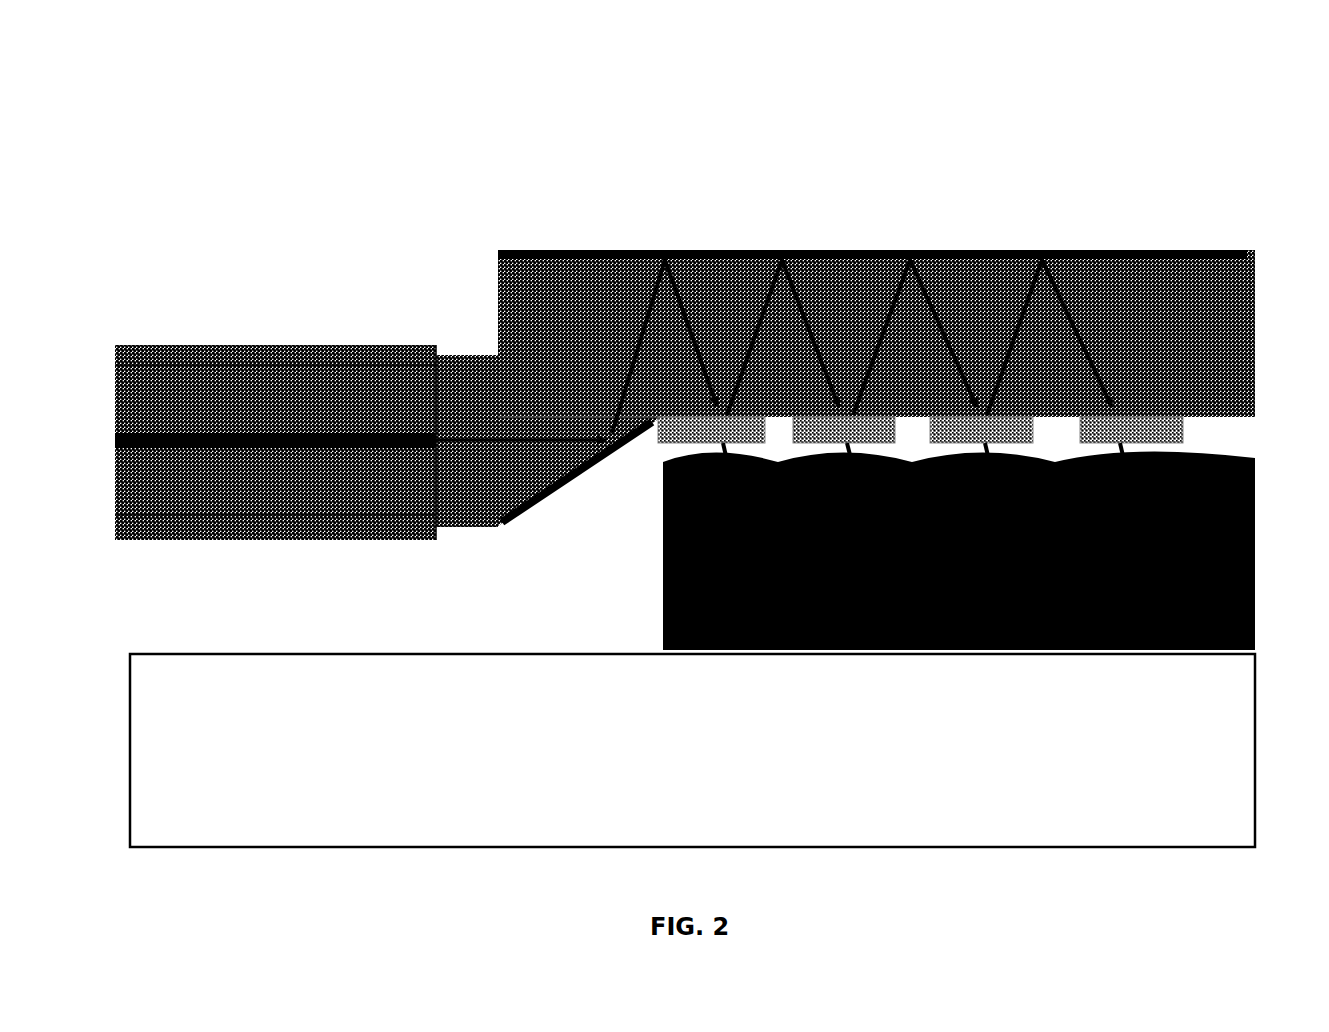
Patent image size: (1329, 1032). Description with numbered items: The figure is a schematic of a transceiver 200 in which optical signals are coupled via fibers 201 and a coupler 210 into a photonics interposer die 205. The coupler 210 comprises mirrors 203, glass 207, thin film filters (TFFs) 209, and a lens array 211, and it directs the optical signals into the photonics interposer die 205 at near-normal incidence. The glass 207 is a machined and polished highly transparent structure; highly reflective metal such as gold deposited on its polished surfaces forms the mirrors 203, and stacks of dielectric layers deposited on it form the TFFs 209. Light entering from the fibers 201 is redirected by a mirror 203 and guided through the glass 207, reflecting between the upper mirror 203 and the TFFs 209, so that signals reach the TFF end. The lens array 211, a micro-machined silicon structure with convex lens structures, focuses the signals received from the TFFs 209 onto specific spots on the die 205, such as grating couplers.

The transceiver 200 is at (187, 100).
The fibers 201 is at (200, 345).
The mirrors 203 is at (515, 555).
The photonics interposer die 205 is at (787, 769).
The glass 207 is at (876, 388).
The thin film filters (TFFs) 209 is at (1190, 428).
The coupler 210 is at (682, 183).
The lens array 211 is at (665, 490).